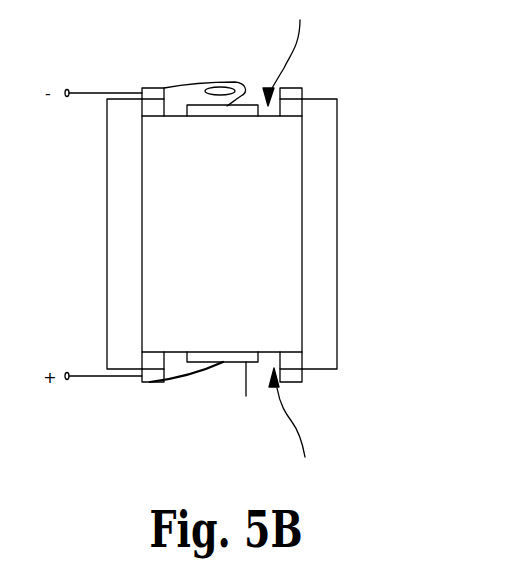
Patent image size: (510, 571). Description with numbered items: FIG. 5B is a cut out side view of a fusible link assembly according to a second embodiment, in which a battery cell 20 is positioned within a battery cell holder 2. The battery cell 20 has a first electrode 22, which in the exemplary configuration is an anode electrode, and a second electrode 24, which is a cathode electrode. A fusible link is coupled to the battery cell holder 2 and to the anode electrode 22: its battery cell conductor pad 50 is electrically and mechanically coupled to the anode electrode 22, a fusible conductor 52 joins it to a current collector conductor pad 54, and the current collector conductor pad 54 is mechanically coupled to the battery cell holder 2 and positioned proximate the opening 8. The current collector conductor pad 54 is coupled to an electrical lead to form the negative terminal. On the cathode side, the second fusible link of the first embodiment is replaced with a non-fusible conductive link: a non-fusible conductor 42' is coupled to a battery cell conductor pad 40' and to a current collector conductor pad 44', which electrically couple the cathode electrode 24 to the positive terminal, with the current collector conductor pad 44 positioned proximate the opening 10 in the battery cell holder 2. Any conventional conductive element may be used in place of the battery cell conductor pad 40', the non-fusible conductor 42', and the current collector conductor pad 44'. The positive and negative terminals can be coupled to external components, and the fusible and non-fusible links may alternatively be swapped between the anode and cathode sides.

The battery cell holder 2 is at (323, 212).
The opening 8 is at (286, 53).
The opening 10 is at (295, 426).
The battery cell 20 is at (203, 238).
The first electrode 22 is at (216, 117).
The second electrode 24 is at (215, 352).
The battery cell conductor pad 40' is at (265, 406).
The non-fusible conductor 42' is at (186, 408).
The current collector conductor pad 44 is at (316, 388).
The current collector conductor pad 44' is at (131, 389).
The battery cell conductor pad 50 is at (245, 104).
The fusible conductor 52 is at (216, 88).
The current collector conductor pad 54 is at (145, 87).